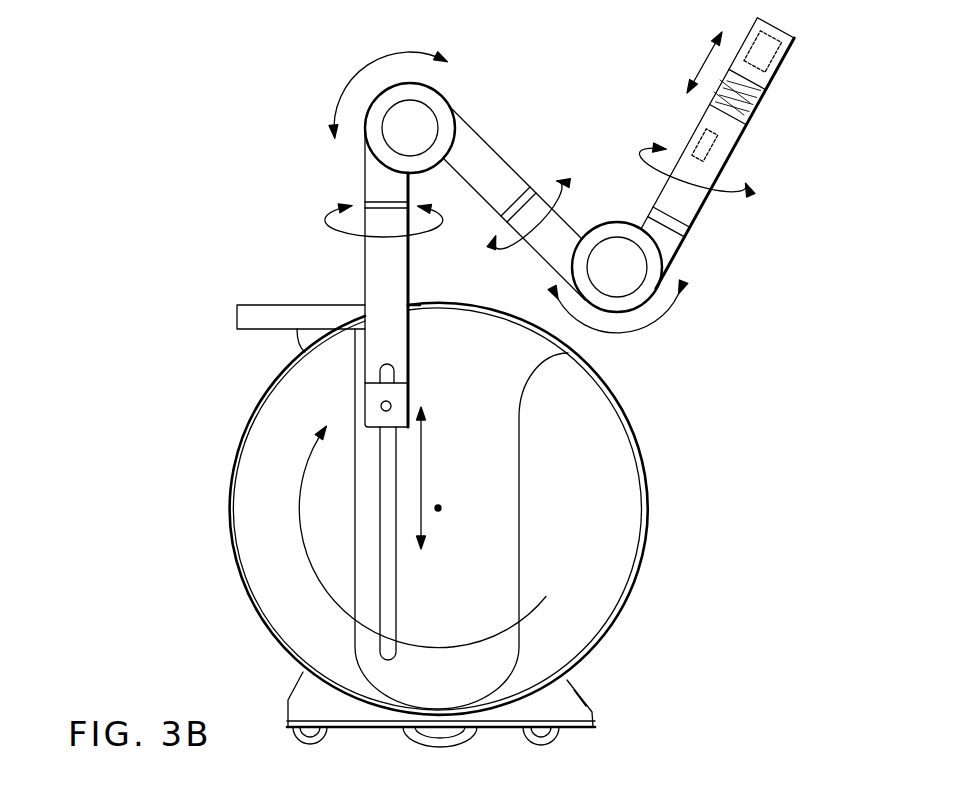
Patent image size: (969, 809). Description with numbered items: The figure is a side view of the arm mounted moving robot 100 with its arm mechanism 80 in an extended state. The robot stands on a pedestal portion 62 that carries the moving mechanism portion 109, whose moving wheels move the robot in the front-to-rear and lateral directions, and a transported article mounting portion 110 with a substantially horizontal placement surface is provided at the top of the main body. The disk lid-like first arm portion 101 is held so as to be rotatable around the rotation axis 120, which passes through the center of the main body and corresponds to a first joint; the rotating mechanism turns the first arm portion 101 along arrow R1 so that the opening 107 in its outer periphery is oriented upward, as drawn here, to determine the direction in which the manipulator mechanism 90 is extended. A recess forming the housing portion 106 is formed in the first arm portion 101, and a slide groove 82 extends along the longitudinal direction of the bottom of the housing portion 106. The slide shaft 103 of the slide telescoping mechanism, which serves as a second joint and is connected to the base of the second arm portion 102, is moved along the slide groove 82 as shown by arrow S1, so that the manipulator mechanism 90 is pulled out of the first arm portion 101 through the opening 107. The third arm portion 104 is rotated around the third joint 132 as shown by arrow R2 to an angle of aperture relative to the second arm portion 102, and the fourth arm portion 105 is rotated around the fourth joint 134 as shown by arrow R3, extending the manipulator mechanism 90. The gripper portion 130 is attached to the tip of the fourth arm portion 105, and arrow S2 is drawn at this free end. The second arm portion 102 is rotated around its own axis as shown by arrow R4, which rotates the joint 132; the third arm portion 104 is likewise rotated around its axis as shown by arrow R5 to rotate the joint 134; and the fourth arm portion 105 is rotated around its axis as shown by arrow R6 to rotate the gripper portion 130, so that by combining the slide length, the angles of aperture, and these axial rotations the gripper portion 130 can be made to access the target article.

The pedestal portion 62 is at (302, 702).
The arm mechanism 80 is at (652, 452).
The slide groove 82 is at (387, 497).
The manipulator mechanism 90 is at (528, 110).
The arm mounted moving robot 100 is at (294, 246).
The first arm portion 101 is at (614, 556).
The second arm portion 102 is at (380, 291).
The slide shaft 103 is at (381, 405).
The third arm portion 104 is at (490, 148).
The fourth arm portion 105 is at (739, 140).
The housing portion 106 is at (507, 640).
The opening 107 is at (442, 313).
The moving mechanism portion 109 is at (560, 733).
The transported article mounting portion 110 is at (248, 305).
The rotation axis 120 is at (441, 508).
The gripper portion 130 is at (800, 43).
The third joint 132 is at (433, 104).
The fourth joint 134 is at (612, 222).
The arrow R1 is at (306, 463).
The arrow R2 is at (362, 67).
The arrow R3 is at (631, 334).
The arrow R4 is at (353, 236).
The arrow R5 is at (500, 254).
The arrow R6 is at (643, 152).
The arrow S1 is at (425, 434).
The arrow S2 is at (704, 62).